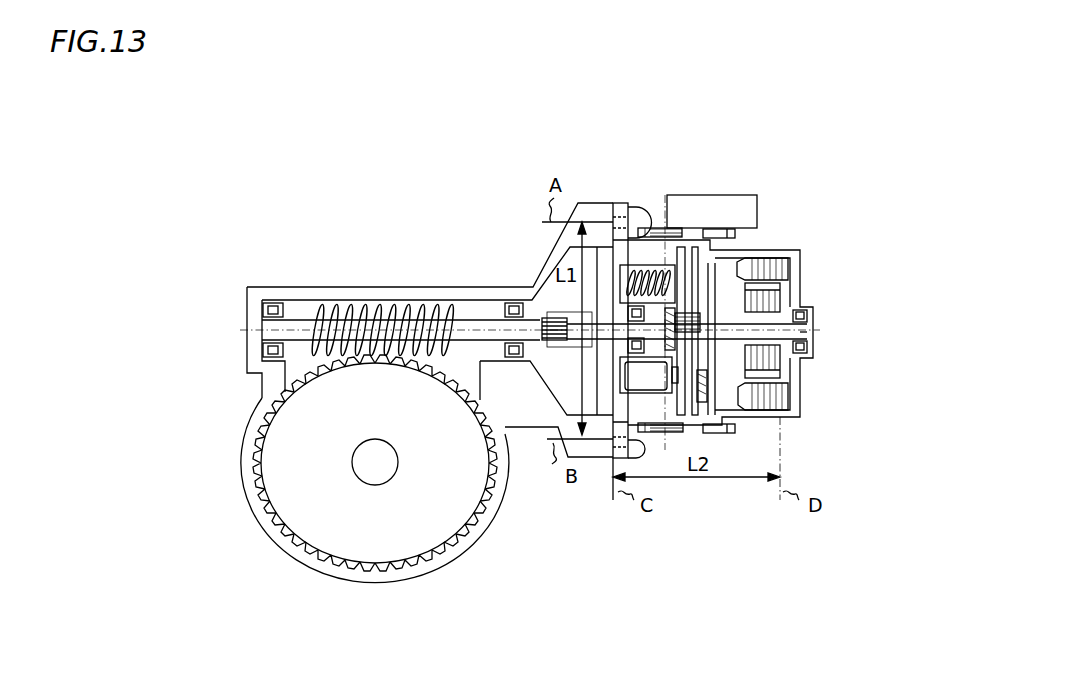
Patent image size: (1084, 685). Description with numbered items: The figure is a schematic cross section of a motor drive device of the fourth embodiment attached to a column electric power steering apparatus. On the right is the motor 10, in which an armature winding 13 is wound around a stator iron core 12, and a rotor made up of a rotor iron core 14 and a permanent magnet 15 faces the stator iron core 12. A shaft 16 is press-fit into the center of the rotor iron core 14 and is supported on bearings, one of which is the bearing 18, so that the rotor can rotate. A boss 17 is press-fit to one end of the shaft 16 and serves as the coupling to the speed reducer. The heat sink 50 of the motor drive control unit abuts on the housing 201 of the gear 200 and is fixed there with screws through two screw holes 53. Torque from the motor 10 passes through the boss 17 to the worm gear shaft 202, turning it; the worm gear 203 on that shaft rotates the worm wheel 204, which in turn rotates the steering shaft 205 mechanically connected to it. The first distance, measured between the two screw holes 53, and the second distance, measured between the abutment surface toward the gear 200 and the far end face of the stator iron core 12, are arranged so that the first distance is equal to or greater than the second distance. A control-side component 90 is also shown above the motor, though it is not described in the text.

The motor 10 is at (772, 407).
The stator iron core 12 is at (765, 265).
The armature winding 13 is at (787, 265).
The rotor iron core 14 is at (777, 305).
The permanent magnet 15 is at (775, 375).
The shaft 16 is at (800, 332).
The boss 17 is at (547, 318).
The bearing 18 is at (810, 315).
The heat sink 50 is at (634, 243).
The screw holes 53 is at (644, 220).
The control unit 90 is at (699, 200).
The gear 200 is at (290, 580).
The housing 201 is at (313, 287).
The worm gear shaft 202 is at (461, 322).
The worm gear 203 is at (308, 315).
The worm wheel 204 is at (443, 532).
The steering shaft 205 is at (357, 467).